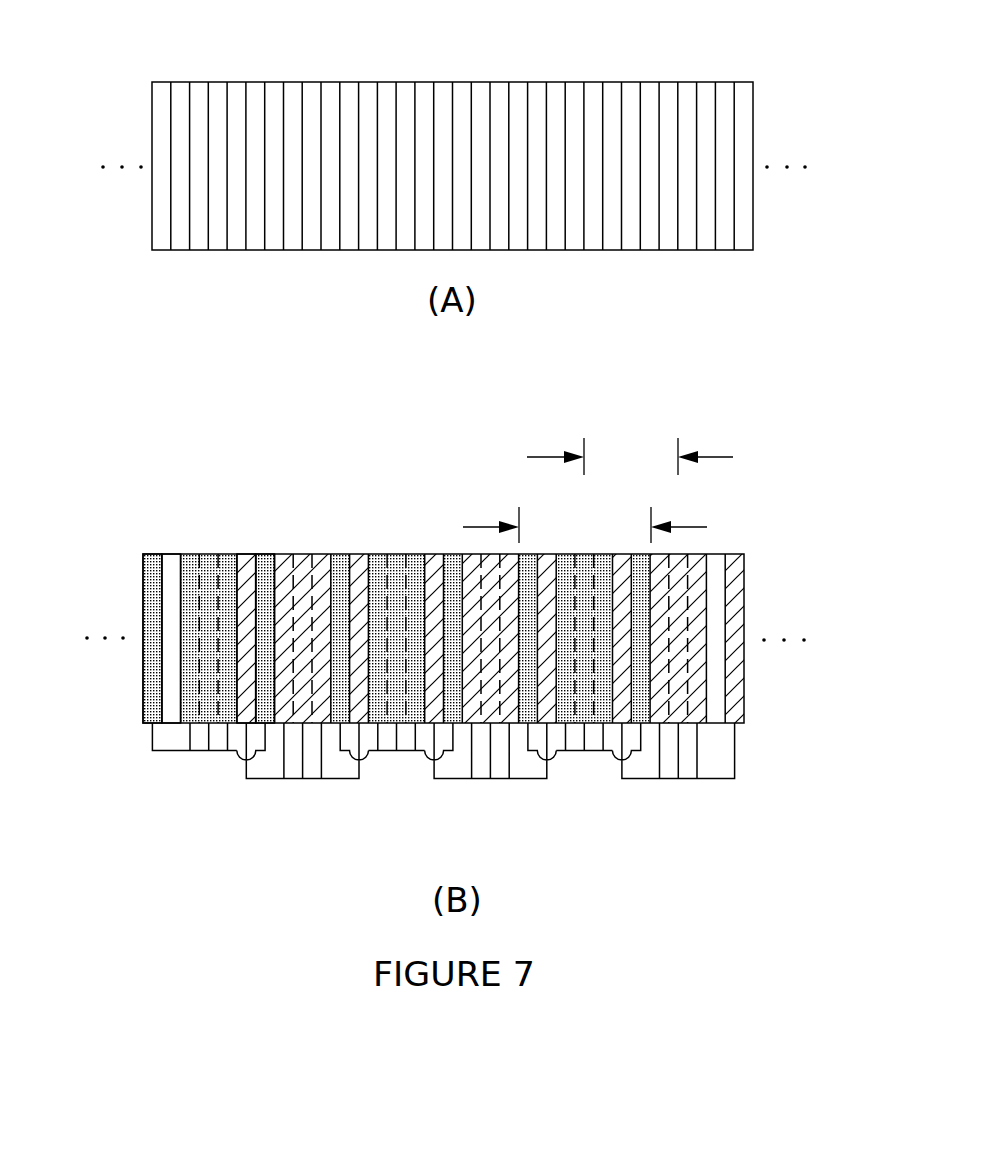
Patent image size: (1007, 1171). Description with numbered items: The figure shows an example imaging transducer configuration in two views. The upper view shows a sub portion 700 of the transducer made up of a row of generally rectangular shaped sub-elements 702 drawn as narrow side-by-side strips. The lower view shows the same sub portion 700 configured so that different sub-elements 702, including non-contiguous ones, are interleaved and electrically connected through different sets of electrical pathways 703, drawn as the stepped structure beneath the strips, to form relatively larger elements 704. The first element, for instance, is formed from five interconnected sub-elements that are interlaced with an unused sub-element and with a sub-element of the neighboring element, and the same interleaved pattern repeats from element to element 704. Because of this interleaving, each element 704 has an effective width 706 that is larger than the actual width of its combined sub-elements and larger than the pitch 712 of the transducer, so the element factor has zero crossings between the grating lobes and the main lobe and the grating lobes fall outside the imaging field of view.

The sub portion 700 is at (112, 37).
The sub-elements 702 is at (744, 82).
The electrical pathways 703 is at (772, 742).
The elements 704 is at (739, 818).
The effective width 706 is at (540, 499).
The pitch 712 is at (660, 485).